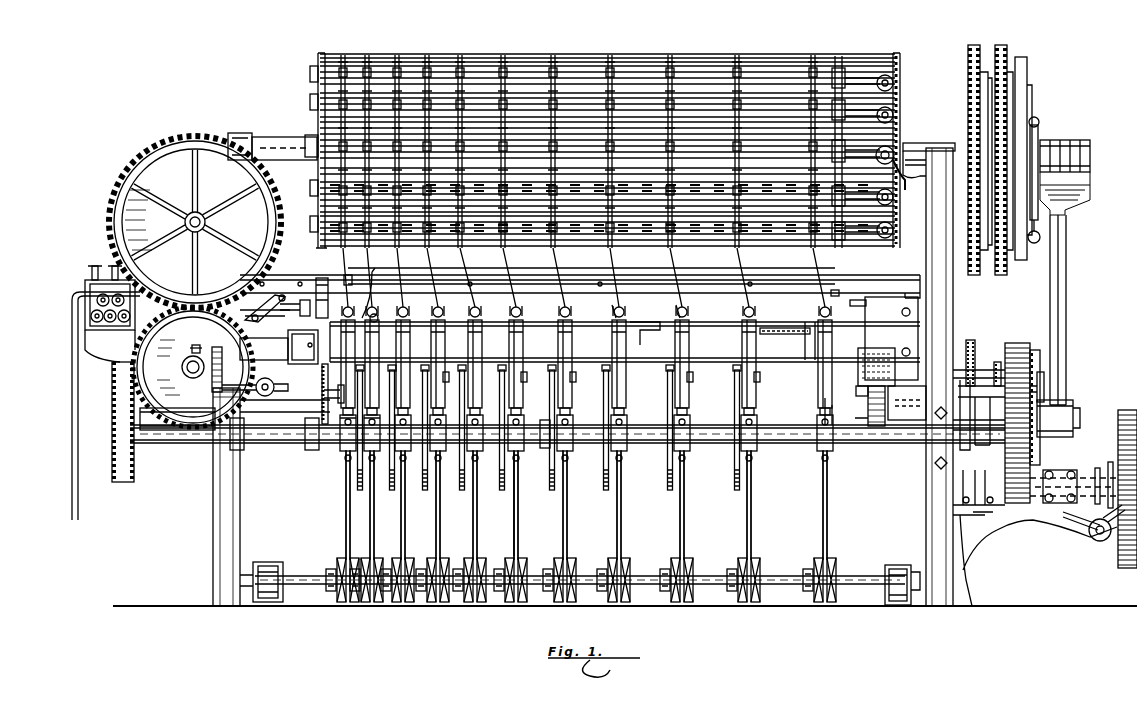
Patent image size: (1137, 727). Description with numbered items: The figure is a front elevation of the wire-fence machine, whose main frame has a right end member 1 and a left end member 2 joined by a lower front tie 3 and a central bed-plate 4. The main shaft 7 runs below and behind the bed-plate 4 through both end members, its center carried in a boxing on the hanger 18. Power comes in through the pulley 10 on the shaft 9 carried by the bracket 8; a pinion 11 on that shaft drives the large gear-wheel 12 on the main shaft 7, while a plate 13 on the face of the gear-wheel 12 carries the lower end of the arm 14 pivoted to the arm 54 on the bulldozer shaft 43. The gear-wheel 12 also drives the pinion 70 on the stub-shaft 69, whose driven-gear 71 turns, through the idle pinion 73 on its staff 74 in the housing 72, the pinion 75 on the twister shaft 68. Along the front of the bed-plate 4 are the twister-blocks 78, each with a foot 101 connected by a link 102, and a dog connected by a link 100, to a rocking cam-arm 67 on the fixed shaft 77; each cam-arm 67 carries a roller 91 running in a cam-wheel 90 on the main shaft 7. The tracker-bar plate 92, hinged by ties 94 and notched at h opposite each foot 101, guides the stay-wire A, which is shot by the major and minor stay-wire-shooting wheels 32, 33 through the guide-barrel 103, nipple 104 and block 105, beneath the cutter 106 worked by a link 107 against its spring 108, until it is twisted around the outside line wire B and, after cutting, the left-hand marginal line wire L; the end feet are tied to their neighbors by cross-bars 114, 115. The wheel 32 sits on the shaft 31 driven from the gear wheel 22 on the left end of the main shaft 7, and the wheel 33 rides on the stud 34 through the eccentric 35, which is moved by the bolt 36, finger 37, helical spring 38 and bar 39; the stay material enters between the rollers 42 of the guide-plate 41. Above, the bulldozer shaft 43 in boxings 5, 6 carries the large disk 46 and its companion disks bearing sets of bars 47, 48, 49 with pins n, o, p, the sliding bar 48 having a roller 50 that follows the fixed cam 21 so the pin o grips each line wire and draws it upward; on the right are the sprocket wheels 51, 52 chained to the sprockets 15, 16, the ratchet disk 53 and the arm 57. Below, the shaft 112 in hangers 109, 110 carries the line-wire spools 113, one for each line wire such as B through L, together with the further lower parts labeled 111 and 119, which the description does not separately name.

The right end member 1 is at (939, 377).
The left end member 2 is at (226, 497).
The cross member 3 is at (283, 566).
The bed-plate 4 is at (832, 290).
The boxing 5 is at (944, 158).
The boxing 6 is at (238, 128).
The main shaft 7 is at (172, 430).
The bracket 8 is at (1010, 525).
The shaft 9 is at (1086, 478).
The pulley 10 is at (1124, 570).
The pinion 11 is at (1020, 505).
The large gear-wheel 12 is at (1018, 343).
The plate 13 is at (1036, 352).
The arm 14 is at (1066, 296).
The sprocket wheel 15 is at (971, 340).
The sprocket wheel 16 is at (995, 366).
The hanger 18 is at (520, 534).
The fixed cam 21 is at (897, 62).
The gear wheel 22 is at (124, 482).
The shaft 31 is at (190, 212).
The major stay-wire-shooting wheel 32 is at (125, 186).
The minor stay-wire-shooting wheel 33 is at (120, 395).
The stud 34 is at (188, 372).
The eccentric 35 is at (180, 360).
The bolt 36 is at (200, 348).
The finger 37 is at (210, 438).
The helical spring 38 is at (222, 372).
The bar 39 is at (272, 384).
The guide-plate 41 is at (85, 288).
The rollers 42 is at (88, 312).
The bulldozer shaft 43 is at (918, 185).
The disk 46 is at (318, 85).
The bar 47 is at (378, 55).
The bar 48 is at (445, 96).
The bar 49 is at (485, 80).
The roller 50 is at (893, 90).
The frictional contact sprocket wheel 51 is at (970, 44).
The frictional contact sprocket wheel 52 is at (1002, 44).
The ratchet disk 53 is at (1028, 70).
The arm 54 is at (1085, 195).
The arm 57 is at (1072, 140).
The rocking cam-arm 67 is at (342, 452).
The twister shaft 68 is at (290, 348).
The stub-shaft 69 is at (1044, 395).
The pinion 70 is at (1045, 395).
The driven-gear 71 is at (868, 407).
The housing 72 is at (884, 338).
The idle pinion 73 is at (868, 392).
The staff 74 is at (910, 402).
The pinion 75 is at (868, 348).
The fixed shaft 77 is at (306, 448).
The twister-block 78 is at (566, 330).
The cam-wheel 90 is at (360, 492).
The roller 91 is at (676, 370).
The plate 92 is at (625, 329).
The ties 94 is at (348, 284).
The link 100 is at (572, 378).
The foot 101 is at (398, 312).
The link 102 is at (632, 335).
The guide-barrel 103 is at (300, 310).
The nipple 104 is at (304, 290).
The block 105 is at (320, 278).
The cutter 106 is at (320, 378).
The link 107 is at (312, 394).
The spring 108 is at (320, 398).
The hanger 109 is at (896, 604).
The hanger 110 is at (266, 602).
The pulley 111 is at (603, 604).
The shaft 112 is at (316, 604).
The spools 113 is at (755, 604).
The cross-bar 114 is at (800, 330).
The cross-bar 115 is at (372, 290).
The pulley 119 is at (458, 604).
The stay-wire A is at (70, 366).
The outside line wire B is at (826, 515).
The cord C is at (750, 518).
The cord D is at (683, 520).
The cord E is at (620, 520).
The cord F is at (566, 524).
The cord G is at (512, 521).
The cord H is at (472, 521).
The cord I is at (434, 524).
The cord J is at (400, 532).
The cord K is at (370, 534).
The left-hand marginal line wire L is at (344, 530).
The notch h is at (612, 312).
The pin n is at (725, 156).
The pin o is at (742, 158).
The pin p is at (713, 158).